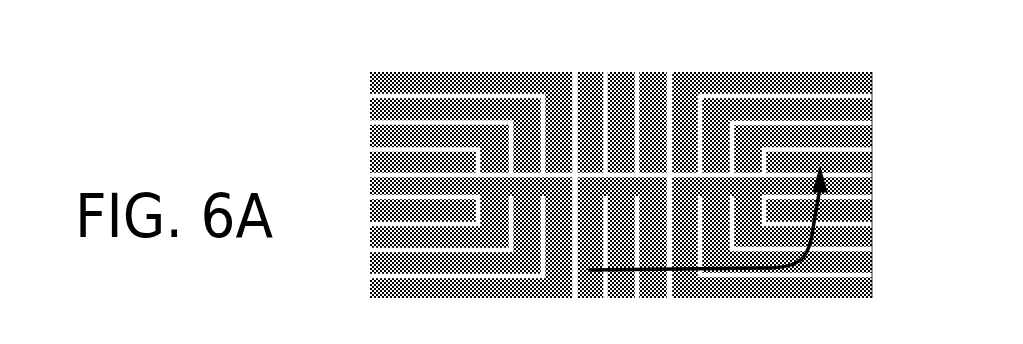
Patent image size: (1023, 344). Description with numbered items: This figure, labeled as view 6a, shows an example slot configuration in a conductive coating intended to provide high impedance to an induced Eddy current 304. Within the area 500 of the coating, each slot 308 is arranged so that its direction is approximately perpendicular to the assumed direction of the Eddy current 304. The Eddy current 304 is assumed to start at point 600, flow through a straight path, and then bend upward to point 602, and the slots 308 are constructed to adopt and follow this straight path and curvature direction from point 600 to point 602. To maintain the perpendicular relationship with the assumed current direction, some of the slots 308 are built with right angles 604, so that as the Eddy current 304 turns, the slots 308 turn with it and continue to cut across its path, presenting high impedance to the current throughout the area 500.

The area 500 is at (767, 65).
The section view indicator 6a is at (358, 177).
The right angles 604 is at (732, 123).
The Eddy current 304 is at (730, 268).
The slot 308 is at (872, 248).
The point 600 is at (586, 262).
The point 602 is at (822, 168).